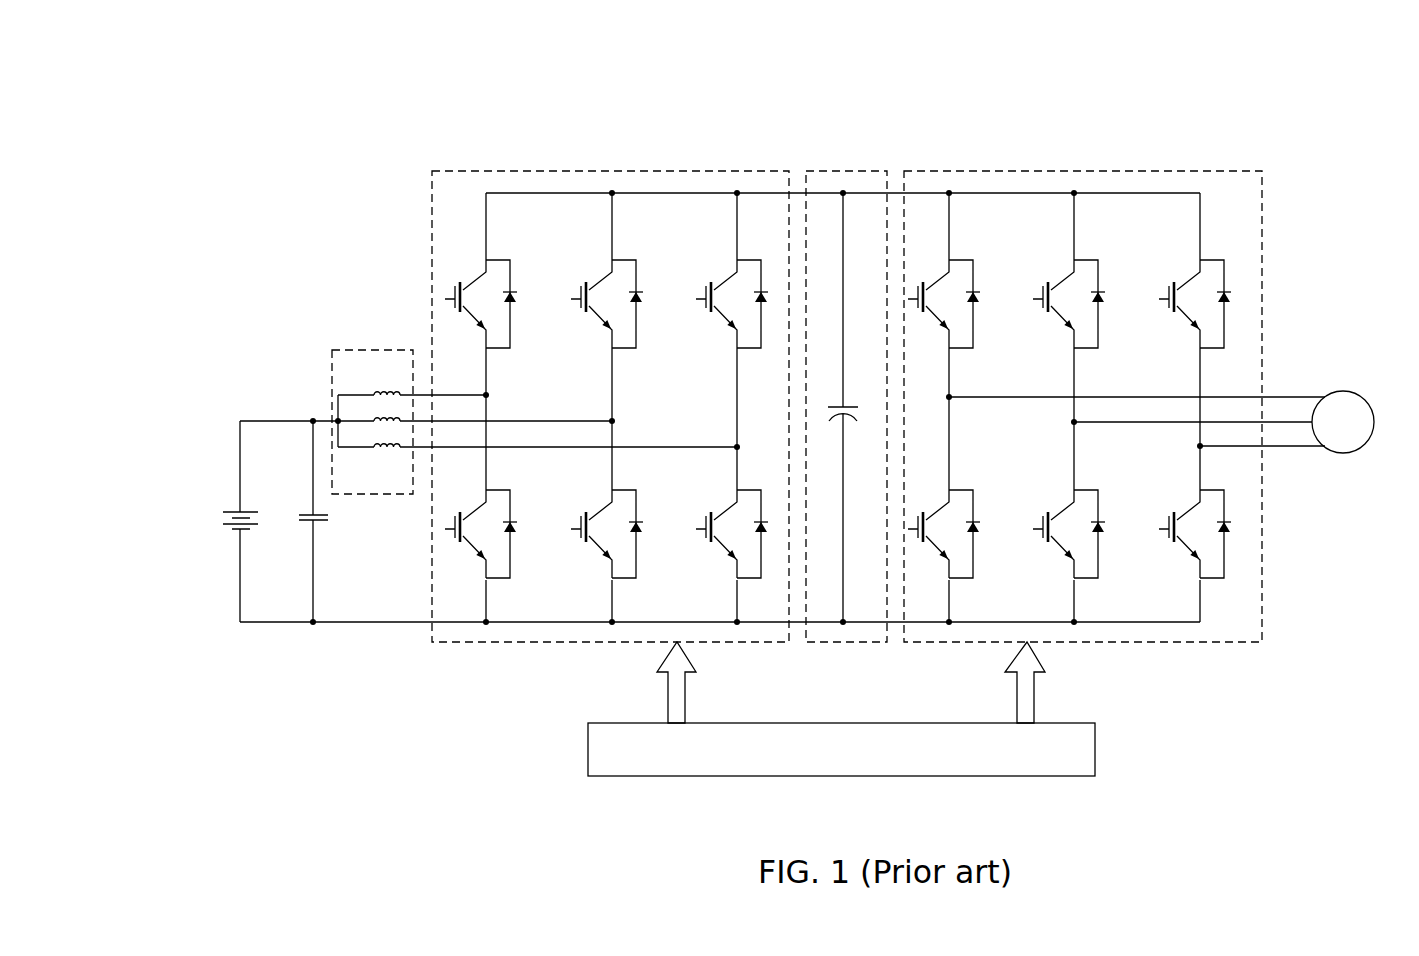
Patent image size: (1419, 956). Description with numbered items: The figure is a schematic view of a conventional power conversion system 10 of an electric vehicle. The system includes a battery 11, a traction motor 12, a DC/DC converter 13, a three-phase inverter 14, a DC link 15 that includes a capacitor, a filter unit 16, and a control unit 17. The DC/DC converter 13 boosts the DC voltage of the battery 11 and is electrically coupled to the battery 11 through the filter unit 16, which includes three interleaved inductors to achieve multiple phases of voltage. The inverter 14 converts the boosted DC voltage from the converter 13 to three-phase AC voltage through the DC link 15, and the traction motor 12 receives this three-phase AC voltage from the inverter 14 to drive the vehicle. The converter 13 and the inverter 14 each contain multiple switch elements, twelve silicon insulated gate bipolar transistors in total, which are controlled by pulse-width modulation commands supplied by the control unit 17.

The power conversion system 10 is at (311, 127).
The battery 11 is at (233, 512).
The traction motor 12 is at (1340, 392).
The DC/DC converter 13 is at (610, 170).
The three-phase inverter 14 is at (1082, 170).
The DC link 15 is at (847, 170).
The filter unit 16 is at (363, 350).
The control unit 17 is at (588, 748).